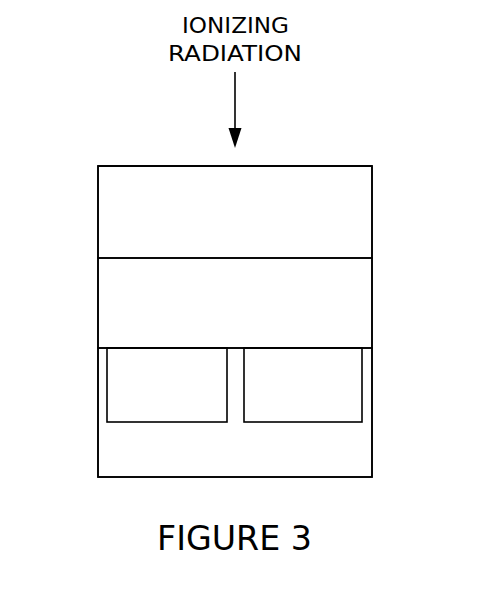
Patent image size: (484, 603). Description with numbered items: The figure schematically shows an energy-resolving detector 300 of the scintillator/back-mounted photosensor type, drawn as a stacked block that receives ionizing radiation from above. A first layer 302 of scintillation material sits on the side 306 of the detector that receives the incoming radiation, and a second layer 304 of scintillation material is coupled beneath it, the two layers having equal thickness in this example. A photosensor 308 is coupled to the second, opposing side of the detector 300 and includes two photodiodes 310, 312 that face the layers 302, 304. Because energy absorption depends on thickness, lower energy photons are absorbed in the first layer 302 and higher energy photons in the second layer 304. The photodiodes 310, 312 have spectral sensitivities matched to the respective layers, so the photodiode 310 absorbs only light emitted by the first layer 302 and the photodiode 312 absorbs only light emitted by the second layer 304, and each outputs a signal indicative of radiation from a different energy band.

The energy-resolving detector 300 is at (100, 131).
The first layer 302 is at (372, 208).
The second layer 304 is at (372, 303).
The side 306 is at (376, 145).
The photosensor 308 is at (98, 452).
The photodiode 310 is at (107, 387).
The photodiode 312 is at (364, 385).